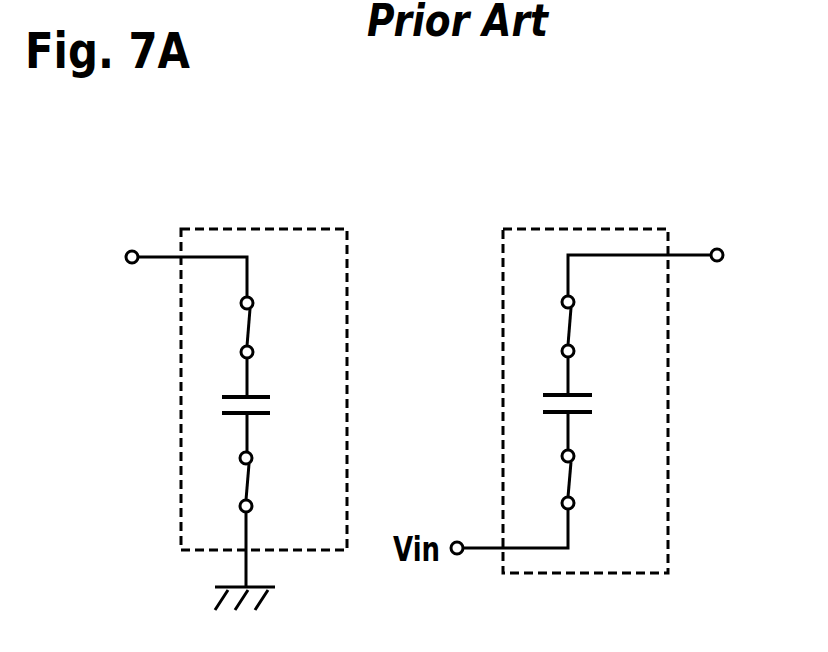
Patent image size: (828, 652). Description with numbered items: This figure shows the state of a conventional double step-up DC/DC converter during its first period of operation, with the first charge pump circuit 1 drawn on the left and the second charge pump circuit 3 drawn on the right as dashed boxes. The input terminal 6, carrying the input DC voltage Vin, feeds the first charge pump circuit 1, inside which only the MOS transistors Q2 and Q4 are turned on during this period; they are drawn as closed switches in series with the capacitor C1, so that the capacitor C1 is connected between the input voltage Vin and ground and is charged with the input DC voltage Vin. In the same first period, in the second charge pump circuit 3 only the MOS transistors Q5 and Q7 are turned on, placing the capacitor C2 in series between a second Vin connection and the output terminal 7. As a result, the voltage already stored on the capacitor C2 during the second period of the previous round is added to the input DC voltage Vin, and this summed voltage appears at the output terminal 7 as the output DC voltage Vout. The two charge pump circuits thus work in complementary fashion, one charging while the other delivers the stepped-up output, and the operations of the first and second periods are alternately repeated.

The first charge pump circuit 1 is at (313, 228).
The second charge pump circuit 3 is at (640, 227).
The input terminal 6 is at (134, 250).
The output terminal 7 is at (717, 248).
The MOS transistor Q2 is at (269, 327).
The MOS transistor Q4 is at (268, 482).
The capacitor C1 is at (263, 405).
The MOS transistor Q5 is at (590, 326).
The MOS transistor Q7 is at (590, 479).
The capacitor C2 is at (585, 405).